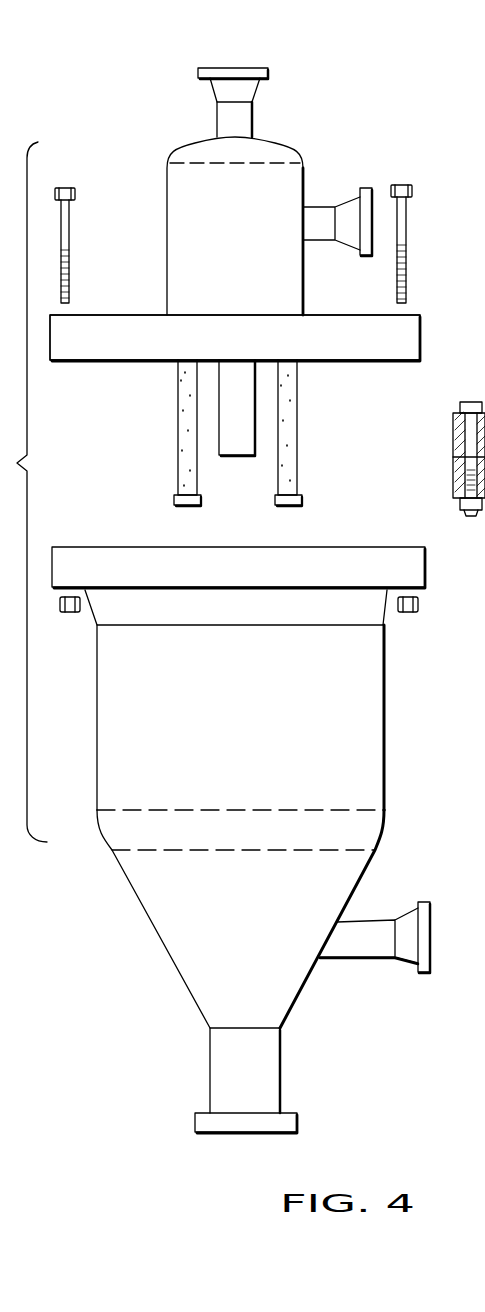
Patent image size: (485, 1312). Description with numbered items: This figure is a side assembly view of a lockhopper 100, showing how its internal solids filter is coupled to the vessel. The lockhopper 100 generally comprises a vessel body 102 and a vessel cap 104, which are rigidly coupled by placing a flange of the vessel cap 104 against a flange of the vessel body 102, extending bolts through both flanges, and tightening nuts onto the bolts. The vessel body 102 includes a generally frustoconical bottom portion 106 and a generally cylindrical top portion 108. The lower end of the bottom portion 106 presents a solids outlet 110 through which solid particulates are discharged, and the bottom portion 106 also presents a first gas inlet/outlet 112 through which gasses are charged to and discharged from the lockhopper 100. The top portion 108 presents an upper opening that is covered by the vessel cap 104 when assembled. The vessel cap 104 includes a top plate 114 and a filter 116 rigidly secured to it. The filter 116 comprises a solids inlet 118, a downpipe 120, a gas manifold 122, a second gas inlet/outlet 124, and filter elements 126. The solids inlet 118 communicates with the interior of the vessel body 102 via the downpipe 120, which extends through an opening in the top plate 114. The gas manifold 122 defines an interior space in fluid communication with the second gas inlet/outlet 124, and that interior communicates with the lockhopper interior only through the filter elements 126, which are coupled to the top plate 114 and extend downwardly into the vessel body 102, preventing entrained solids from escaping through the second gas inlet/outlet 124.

The lockhopper 100 is at (333, 100).
The vessel body 102 is at (333, 548).
The vessel cap 104 is at (330, 360).
The bottom portion 106 is at (145, 915).
The top portion 108 is at (367, 724).
The solids outlet 110 is at (228, 1134).
The first gas inlet/outlet 112 is at (432, 915).
The top plate 114 is at (143, 316).
The filter 116 is at (162, 133).
The solids inlet 118 is at (222, 68).
The downpipe 120 is at (226, 410).
The gas manifold 122 is at (166, 226).
The second gas inlet/outlet 124 is at (372, 200).
The filter elements 126 is at (177, 455).